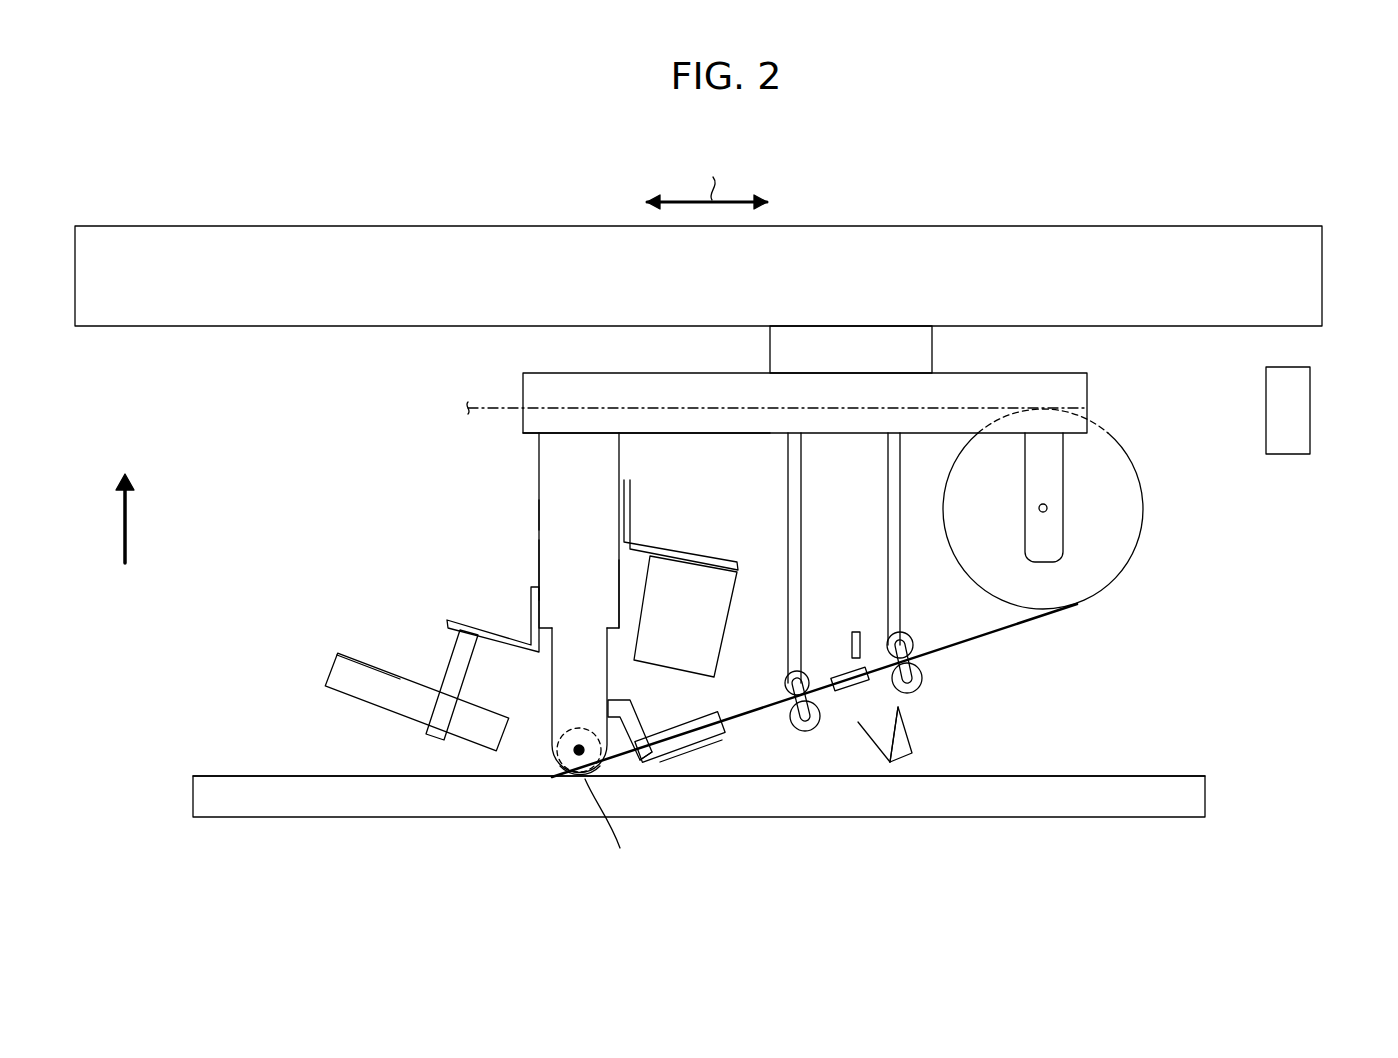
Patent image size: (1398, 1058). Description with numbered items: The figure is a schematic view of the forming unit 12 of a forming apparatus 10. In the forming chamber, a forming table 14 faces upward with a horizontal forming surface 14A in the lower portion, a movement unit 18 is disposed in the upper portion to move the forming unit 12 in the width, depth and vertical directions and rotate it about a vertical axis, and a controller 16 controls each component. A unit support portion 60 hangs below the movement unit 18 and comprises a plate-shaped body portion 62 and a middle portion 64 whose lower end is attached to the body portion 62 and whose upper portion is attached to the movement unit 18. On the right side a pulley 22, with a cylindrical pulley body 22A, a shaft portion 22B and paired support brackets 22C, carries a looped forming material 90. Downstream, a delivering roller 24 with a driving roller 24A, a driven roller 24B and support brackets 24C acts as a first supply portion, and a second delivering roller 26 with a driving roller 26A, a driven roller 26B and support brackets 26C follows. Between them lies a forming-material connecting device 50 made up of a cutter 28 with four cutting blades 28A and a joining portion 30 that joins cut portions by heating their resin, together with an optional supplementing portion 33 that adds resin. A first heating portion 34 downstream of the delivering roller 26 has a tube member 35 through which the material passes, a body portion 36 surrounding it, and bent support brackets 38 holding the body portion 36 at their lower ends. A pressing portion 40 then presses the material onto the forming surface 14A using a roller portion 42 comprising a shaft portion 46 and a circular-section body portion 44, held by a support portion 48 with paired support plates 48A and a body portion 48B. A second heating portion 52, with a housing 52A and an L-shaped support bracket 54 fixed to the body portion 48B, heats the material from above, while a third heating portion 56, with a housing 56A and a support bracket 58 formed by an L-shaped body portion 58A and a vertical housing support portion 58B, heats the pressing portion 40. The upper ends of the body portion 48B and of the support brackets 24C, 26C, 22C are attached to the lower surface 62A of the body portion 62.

The forming apparatus 10 is at (1092, 191).
The forming unit 12 is at (402, 498).
The forming table 14 is at (699, 743).
The forming surface 14A is at (257, 775).
The controller 16 is at (1312, 410).
The movement unit 18 is at (246, 338).
The pulley 22 is at (1087, 509).
The pulley body 22A is at (1135, 508).
The shaft portion 22B is at (1050, 506).
The support brackets 22C is at (1067, 471).
The delivering roller 24 is at (962, 582).
The driving roller 24A is at (903, 646).
The driven roller 24B is at (923, 680).
The support brackets 24C is at (901, 470).
The delivering roller 26 is at (776, 644).
The driving roller 26A is at (795, 690).
The driven roller 26B is at (815, 724).
The support brackets 26C is at (788, 470).
The cutter 28 is at (928, 793).
The cutting blades 28A is at (901, 722).
The joining portion 30 is at (838, 667).
The supplementing portion 33 is at (858, 628).
The first heating portion 34 is at (690, 758).
The tube member 35 is at (623, 773).
The body portion 36 is at (686, 775).
The support brackets 38 is at (649, 742).
The pressing portion 40 is at (535, 558).
The roller portion 42 is at (552, 822).
The body portion 44 is at (592, 777).
The shaft portion 46 is at (568, 766).
The support portion 48 is at (524, 530).
The support plates 48A is at (518, 772).
The body portion 48B is at (552, 512).
The forming-material connecting device 50 is at (849, 710).
The second heating portion 52 is at (737, 596).
The housing 52A is at (618, 593).
The support bracket 54 is at (640, 545).
The third heating portion 56 is at (371, 700).
The housing 56A is at (370, 692).
The support bracket 58 is at (421, 642).
The body portion 58A is at (497, 630).
The housing support portion 58B is at (447, 668).
The unit support portion 60 is at (777, 291).
The body portion 62 is at (1002, 387).
The lower surface 62A is at (685, 444).
The middle portion 64 is at (847, 350).
The forming material 90 is at (1013, 628).